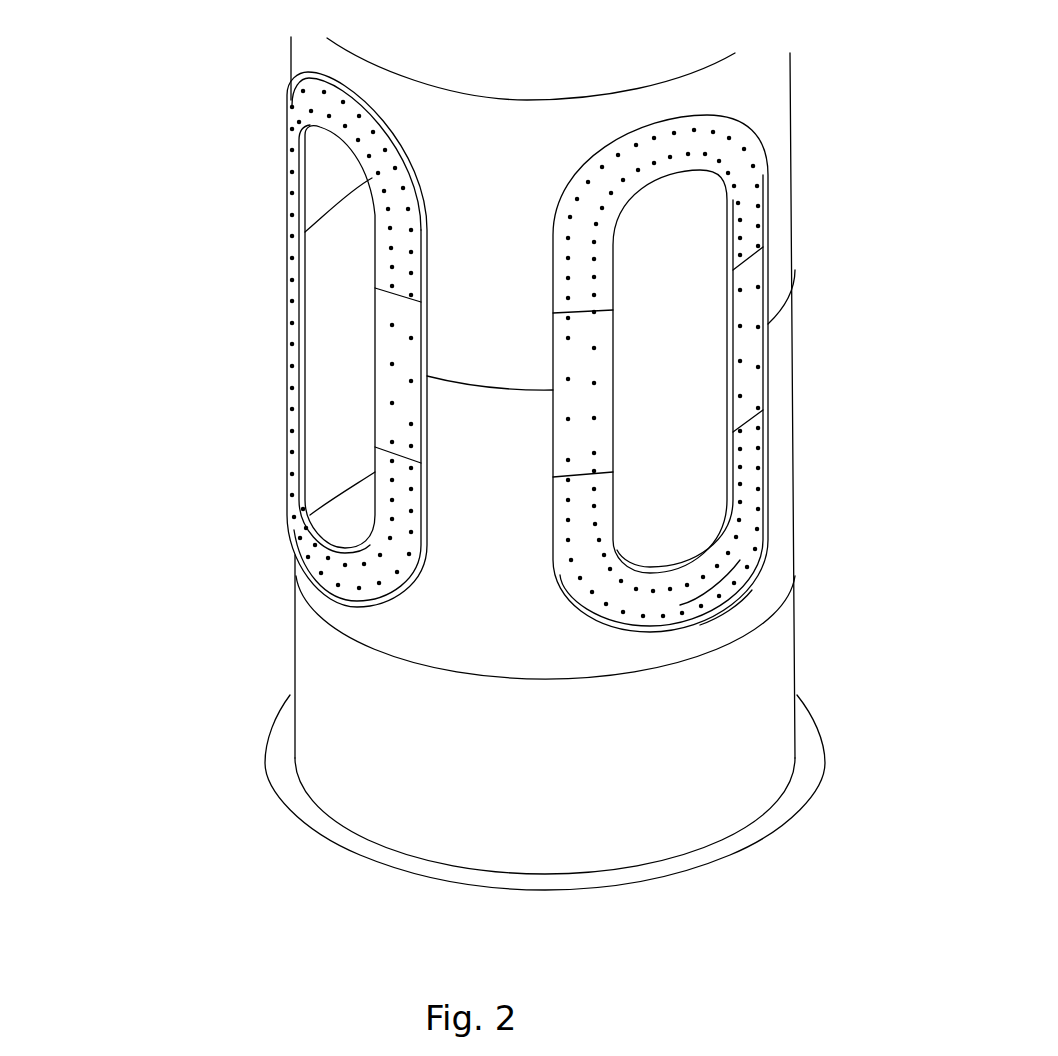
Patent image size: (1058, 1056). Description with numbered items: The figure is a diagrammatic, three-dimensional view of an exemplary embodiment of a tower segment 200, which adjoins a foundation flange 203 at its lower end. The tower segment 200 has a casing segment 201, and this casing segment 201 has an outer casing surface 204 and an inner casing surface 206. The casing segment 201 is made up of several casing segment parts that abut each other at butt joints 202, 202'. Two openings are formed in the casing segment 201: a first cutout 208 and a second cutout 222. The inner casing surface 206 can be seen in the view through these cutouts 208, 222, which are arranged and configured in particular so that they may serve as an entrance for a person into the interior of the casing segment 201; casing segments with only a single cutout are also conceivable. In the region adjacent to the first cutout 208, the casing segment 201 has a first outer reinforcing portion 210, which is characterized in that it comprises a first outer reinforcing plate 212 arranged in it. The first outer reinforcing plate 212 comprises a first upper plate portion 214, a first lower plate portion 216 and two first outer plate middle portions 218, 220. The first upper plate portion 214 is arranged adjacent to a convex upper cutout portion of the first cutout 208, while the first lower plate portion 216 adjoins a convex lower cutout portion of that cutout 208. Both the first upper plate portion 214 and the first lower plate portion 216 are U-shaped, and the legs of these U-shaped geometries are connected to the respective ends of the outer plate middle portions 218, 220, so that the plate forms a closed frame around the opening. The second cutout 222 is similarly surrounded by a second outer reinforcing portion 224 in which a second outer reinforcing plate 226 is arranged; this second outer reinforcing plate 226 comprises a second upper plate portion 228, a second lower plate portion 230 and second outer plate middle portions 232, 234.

The tower segment 200 is at (205, 183).
The casing segment 201 is at (777, 378).
The butt joint 202 is at (593, 639).
The butt joint 202' is at (645, 214).
The foundation flange 203 is at (766, 824).
The outer casing surface 204 is at (580, 660).
The inner casing surface 206 is at (327, 160).
The first cutout 208 is at (705, 242).
The first outer reinforcing portion 210 is at (736, 654).
The first outer reinforcing plate 212 is at (723, 610).
The first upper plate portion 214 is at (736, 150).
The first lower plate portion 216 is at (738, 562).
The first outer plate middle portion 218 is at (757, 340).
The first outer plate middle portion 220 is at (725, 485).
The second cutout 222 is at (325, 263).
The second outer reinforcing portion 224 is at (328, 600).
The second outer reinforcing plate 226 is at (300, 527).
The second upper plate portion 228 is at (320, 106).
The second lower plate portion 230 is at (335, 573).
The second outer plate middle portion 232 is at (385, 412).
The second outer plate middle portion 234 is at (290, 314).